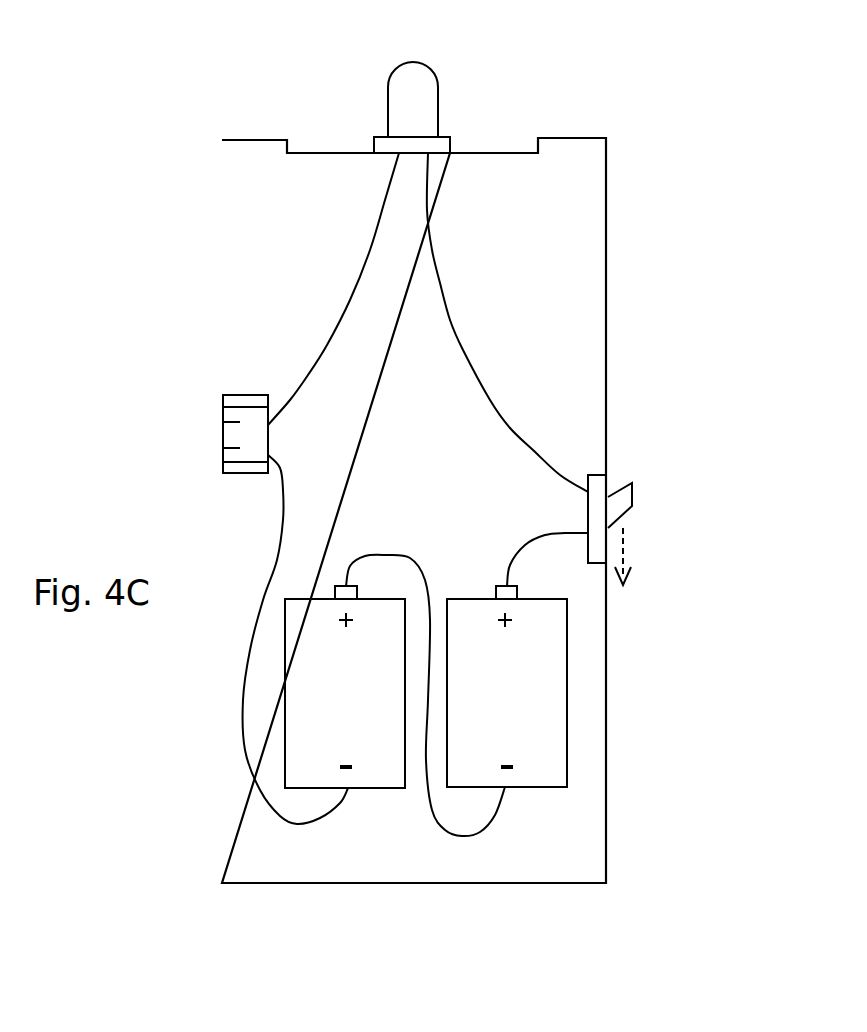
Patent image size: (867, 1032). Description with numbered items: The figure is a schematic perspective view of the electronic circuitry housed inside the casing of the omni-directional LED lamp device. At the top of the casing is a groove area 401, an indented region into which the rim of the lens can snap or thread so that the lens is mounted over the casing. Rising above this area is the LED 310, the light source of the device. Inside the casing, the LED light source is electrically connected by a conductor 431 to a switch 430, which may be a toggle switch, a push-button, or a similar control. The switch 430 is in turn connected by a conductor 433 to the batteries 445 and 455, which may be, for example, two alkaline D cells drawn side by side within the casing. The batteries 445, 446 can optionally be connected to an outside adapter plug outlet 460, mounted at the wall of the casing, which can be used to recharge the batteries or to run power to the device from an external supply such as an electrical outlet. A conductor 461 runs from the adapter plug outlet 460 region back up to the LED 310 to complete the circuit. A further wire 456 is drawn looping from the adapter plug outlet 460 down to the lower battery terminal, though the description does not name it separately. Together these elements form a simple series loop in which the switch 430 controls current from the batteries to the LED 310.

The LED 310 is at (418, 87).
The groove area 401 is at (288, 147).
The switch 430 is at (597, 497).
The conductor 431 is at (492, 398).
The conductor 433 is at (527, 553).
The battery 445 is at (517, 705).
The battery 446 is at (460, 837).
The battery 455 is at (302, 610).
The wire from connector to battery 456 is at (247, 768).
The outside adapter plug outlet 460 is at (223, 437).
The conductor 461 is at (330, 345).